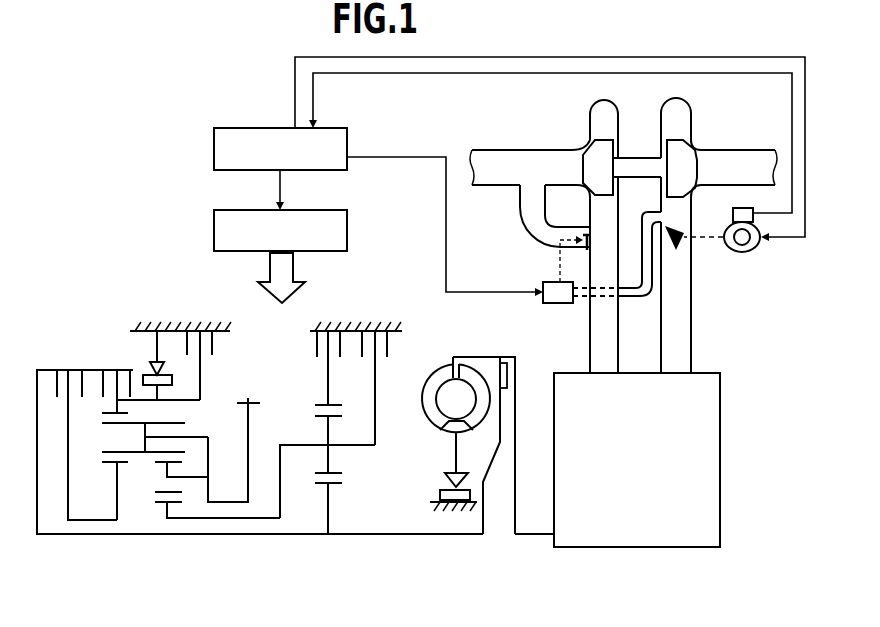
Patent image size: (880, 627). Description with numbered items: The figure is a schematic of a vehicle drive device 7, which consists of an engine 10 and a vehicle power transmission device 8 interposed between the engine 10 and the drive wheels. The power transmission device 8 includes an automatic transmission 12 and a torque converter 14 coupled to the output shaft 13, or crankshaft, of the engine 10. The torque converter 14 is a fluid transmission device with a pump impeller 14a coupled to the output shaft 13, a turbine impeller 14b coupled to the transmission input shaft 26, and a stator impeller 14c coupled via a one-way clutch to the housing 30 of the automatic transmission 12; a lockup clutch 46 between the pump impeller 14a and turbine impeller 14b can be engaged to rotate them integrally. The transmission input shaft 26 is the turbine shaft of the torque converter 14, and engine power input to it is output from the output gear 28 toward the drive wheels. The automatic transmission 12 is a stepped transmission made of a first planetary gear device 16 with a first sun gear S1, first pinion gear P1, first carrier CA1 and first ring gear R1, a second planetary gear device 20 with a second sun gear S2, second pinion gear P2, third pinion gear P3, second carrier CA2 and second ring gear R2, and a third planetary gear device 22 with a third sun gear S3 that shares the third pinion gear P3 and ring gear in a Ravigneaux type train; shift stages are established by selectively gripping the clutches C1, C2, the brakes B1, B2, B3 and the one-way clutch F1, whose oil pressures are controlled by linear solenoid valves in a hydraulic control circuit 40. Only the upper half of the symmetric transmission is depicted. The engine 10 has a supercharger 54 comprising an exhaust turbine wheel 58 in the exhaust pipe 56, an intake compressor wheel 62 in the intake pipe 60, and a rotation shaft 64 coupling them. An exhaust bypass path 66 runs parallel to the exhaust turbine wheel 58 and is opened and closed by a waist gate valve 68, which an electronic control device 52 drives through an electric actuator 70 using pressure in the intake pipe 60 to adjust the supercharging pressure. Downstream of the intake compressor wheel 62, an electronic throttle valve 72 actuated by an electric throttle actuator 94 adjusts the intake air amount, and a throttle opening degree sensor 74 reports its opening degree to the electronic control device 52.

The vehicle drive device 7 is at (76, 189).
The vehicle power transmission device 8 is at (79, 248).
The engine 10 is at (705, 380).
The automatic transmission 12 is at (152, 284).
The output shaft 13 is at (528, 535).
The torque converter 14 is at (473, 340).
The pump impeller 14a is at (428, 395).
The turbine impeller 14b is at (488, 403).
The stator impeller 14c is at (448, 442).
The first planetary gear device 16 is at (328, 546).
The second planetary gear device 20 is at (170, 544).
The third planetary gear device 22 is at (118, 544).
The transmission input shaft 26 is at (468, 535).
The output gear 28 is at (255, 400).
The housing 30 is at (178, 323).
The hydraulic control circuit 40 is at (333, 213).
The lockup clutch 46 is at (523, 372).
The electronic control device 52 is at (337, 132).
The supercharger 54 is at (648, 139).
The exhaust pipe 56 is at (535, 152).
The exhaust turbine wheel 58 is at (593, 147).
The intake pipe 60 is at (753, 155).
The intake compressor wheel 62 is at (685, 155).
The rotation shaft 64 is at (630, 163).
The exhaust bypass path 66 is at (527, 208).
The waist gate valve 68 is at (582, 234).
The electric actuator 70 is at (563, 303).
The electronic throttle valve 72 is at (678, 222).
The throttle opening degree sensor 74 is at (747, 210).
The electric throttle actuator 94 is at (757, 245).
The clutch C1 is at (80, 435).
The clutch C2 is at (116, 381).
The brake B1 is at (388, 388).
The brake B2 is at (213, 343).
The brake B3 is at (314, 344).
The one-way clutch F1 is at (150, 367).
The first ring gear R1 is at (322, 403).
The second ring gear R2 is at (110, 408).
The first pinion gear P1 is at (330, 414).
The second pinion gear P2 is at (162, 463).
The third pinion gear P3 is at (112, 423).
The first sun gear S1 is at (332, 487).
The second sun gear S2 is at (162, 503).
The third sun gear S3 is at (112, 463).
The first carrier CA1 is at (352, 447).
The second carrier CA2 is at (200, 437).